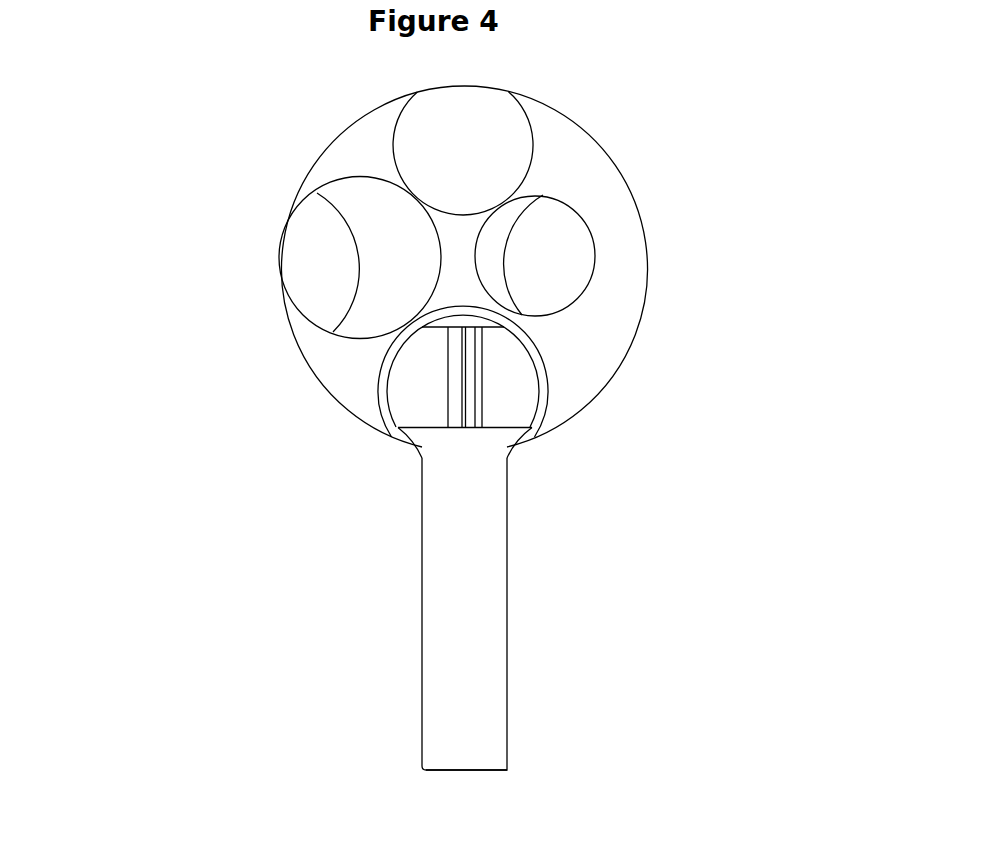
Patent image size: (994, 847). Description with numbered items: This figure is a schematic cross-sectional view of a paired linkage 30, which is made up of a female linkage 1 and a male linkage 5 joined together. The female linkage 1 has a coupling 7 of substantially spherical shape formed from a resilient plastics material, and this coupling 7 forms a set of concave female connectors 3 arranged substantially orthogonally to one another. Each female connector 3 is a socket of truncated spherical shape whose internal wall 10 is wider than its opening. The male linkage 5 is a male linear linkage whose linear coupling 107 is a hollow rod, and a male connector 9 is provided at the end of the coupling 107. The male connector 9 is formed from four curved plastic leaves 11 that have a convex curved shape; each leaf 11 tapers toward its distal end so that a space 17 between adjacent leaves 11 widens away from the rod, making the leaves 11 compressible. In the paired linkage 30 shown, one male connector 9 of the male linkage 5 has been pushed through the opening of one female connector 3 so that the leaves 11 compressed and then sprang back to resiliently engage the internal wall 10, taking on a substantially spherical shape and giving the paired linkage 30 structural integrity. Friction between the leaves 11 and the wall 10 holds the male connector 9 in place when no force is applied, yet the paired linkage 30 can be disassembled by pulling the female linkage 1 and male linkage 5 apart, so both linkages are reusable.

The female linkage 1 is at (255, 233).
The female connector 3 is at (547, 400).
The male linkage 5 is at (515, 570).
The coupling 7 is at (615, 350).
The male connector 9 is at (532, 463).
The internal wall 10 is at (458, 321).
The curved plastic leaf 11 is at (408, 393).
The space 17 is at (466, 377).
The paired linkage 30 is at (242, 458).
The linear coupling 107 is at (485, 688).